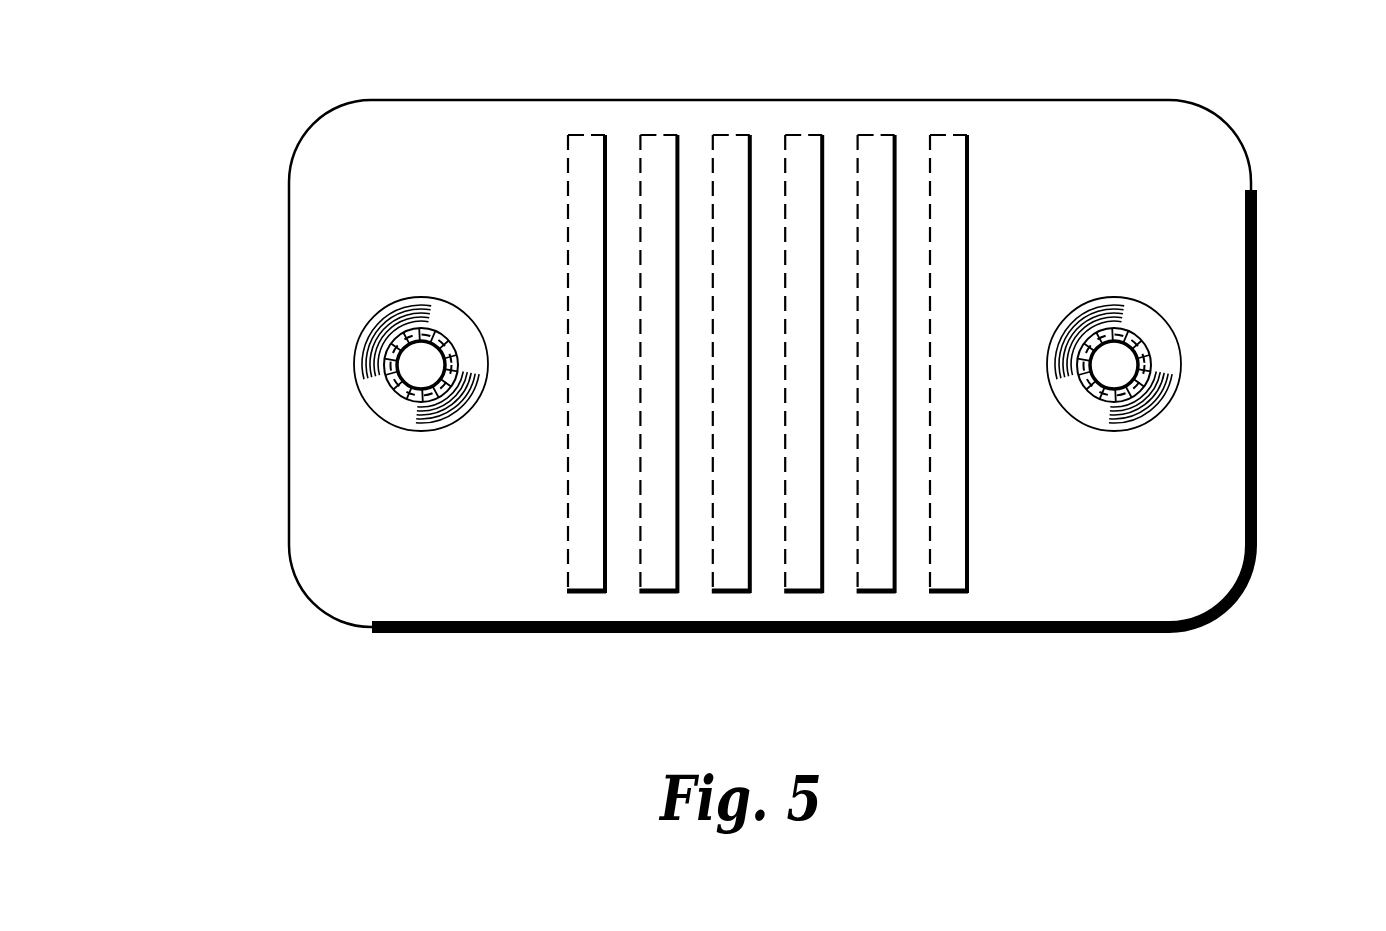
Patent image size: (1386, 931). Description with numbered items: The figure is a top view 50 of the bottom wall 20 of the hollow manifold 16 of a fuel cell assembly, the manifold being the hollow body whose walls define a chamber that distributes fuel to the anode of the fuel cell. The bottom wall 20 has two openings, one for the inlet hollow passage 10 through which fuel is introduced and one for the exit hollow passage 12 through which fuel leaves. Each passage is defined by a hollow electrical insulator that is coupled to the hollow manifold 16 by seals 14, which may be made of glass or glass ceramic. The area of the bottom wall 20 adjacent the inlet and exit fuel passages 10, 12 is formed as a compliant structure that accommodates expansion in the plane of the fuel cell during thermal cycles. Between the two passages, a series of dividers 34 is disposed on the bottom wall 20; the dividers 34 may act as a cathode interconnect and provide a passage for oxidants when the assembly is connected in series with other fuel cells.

The top view 50 is at (738, 328).
The bottom wall 20 is at (1207, 223).
The divider 34 is at (585, 148).
The inlet hollow passage 10 is at (338, 340).
The exit hollow passage 12 is at (1190, 348).
The seals 14 is at (396, 384).
The hollow manifold 16 is at (1140, 351).